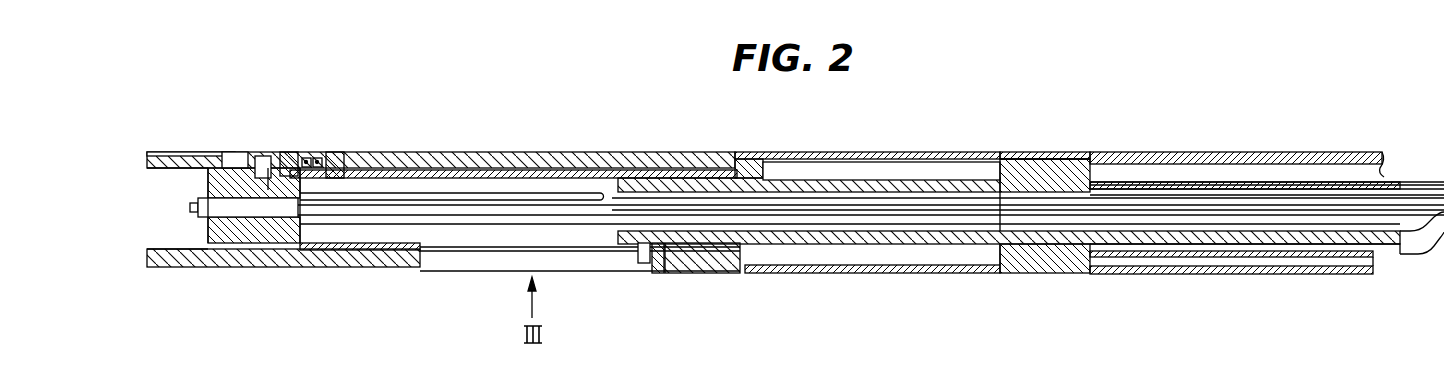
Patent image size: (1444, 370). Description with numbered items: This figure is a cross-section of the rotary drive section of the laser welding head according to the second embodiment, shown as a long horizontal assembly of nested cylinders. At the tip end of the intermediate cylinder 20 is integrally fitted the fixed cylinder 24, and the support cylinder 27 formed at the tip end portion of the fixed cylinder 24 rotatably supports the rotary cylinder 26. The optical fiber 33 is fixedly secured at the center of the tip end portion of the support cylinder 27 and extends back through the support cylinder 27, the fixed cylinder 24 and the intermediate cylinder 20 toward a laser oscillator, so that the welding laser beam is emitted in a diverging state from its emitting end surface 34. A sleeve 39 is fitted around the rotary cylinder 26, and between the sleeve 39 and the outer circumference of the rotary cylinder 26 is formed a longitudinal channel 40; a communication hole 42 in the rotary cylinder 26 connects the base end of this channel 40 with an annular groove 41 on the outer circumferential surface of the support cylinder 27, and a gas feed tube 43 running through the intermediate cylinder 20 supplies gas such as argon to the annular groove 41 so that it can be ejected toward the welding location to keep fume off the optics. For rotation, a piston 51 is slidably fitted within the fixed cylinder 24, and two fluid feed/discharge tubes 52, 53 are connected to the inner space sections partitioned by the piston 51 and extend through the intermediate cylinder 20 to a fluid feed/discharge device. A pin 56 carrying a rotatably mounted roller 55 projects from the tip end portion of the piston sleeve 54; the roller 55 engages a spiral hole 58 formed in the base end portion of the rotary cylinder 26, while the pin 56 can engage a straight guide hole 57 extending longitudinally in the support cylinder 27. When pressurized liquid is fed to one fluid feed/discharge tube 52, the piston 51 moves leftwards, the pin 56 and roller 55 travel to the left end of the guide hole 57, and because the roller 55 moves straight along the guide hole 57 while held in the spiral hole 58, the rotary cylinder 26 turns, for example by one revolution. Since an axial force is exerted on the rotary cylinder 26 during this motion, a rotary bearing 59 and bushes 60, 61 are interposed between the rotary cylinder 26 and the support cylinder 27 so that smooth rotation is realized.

The intermediate cylinder 20 is at (1256, 152).
The fixed cylinder 24 is at (905, 152).
The rotary cylinder 26 is at (585, 153).
The support cylinder 27 is at (542, 169).
The optical fiber 33 is at (336, 212).
The emitting end surface 34 is at (190, 207).
The sleeve 39 is at (200, 151).
The channel 40 is at (183, 151).
The annular groove 41 is at (236, 151).
The communication hole 42 is at (268, 168).
The gas feed tube 43 is at (1172, 196).
The piston 51 is at (1047, 164).
The fluid feed/discharge tube 52 is at (1212, 257).
The fluid feed/discharge tube 53 is at (1437, 170).
The piston sleeve 54 is at (832, 178).
The roller 55 is at (644, 266).
The pin 56 is at (657, 273).
The guide hole 57 is at (463, 251).
The spiral hole 58 is at (580, 271).
The rotary bearing 59 is at (288, 151).
The bush 60 is at (333, 152).
The bush 61 is at (727, 265).